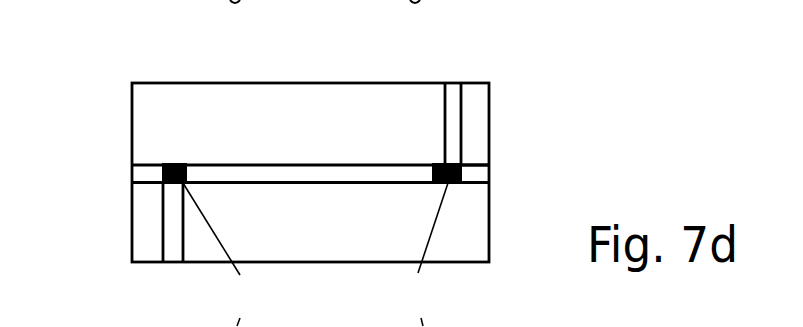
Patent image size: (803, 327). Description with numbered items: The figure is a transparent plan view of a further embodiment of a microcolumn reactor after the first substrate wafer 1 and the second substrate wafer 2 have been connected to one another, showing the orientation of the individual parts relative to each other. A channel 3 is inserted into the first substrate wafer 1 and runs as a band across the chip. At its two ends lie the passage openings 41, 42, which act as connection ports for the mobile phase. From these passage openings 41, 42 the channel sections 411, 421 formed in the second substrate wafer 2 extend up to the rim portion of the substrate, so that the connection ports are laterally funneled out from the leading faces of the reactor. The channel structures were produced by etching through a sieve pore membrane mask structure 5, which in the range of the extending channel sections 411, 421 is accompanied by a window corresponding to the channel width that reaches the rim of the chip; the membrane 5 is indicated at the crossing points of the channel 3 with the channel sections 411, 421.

The first substrate wafer 1 is at (305, 128).
The second substrate wafer 2 is at (356, 83).
The channel 3 is at (453, 90).
The passage opening 41 is at (172, 163).
The channel section 411 is at (147, 173).
The passage opening 42 is at (448, 165).
The channel section 421 is at (477, 172).
The partially permeable sieve-like membrane 5 is at (315, 246).